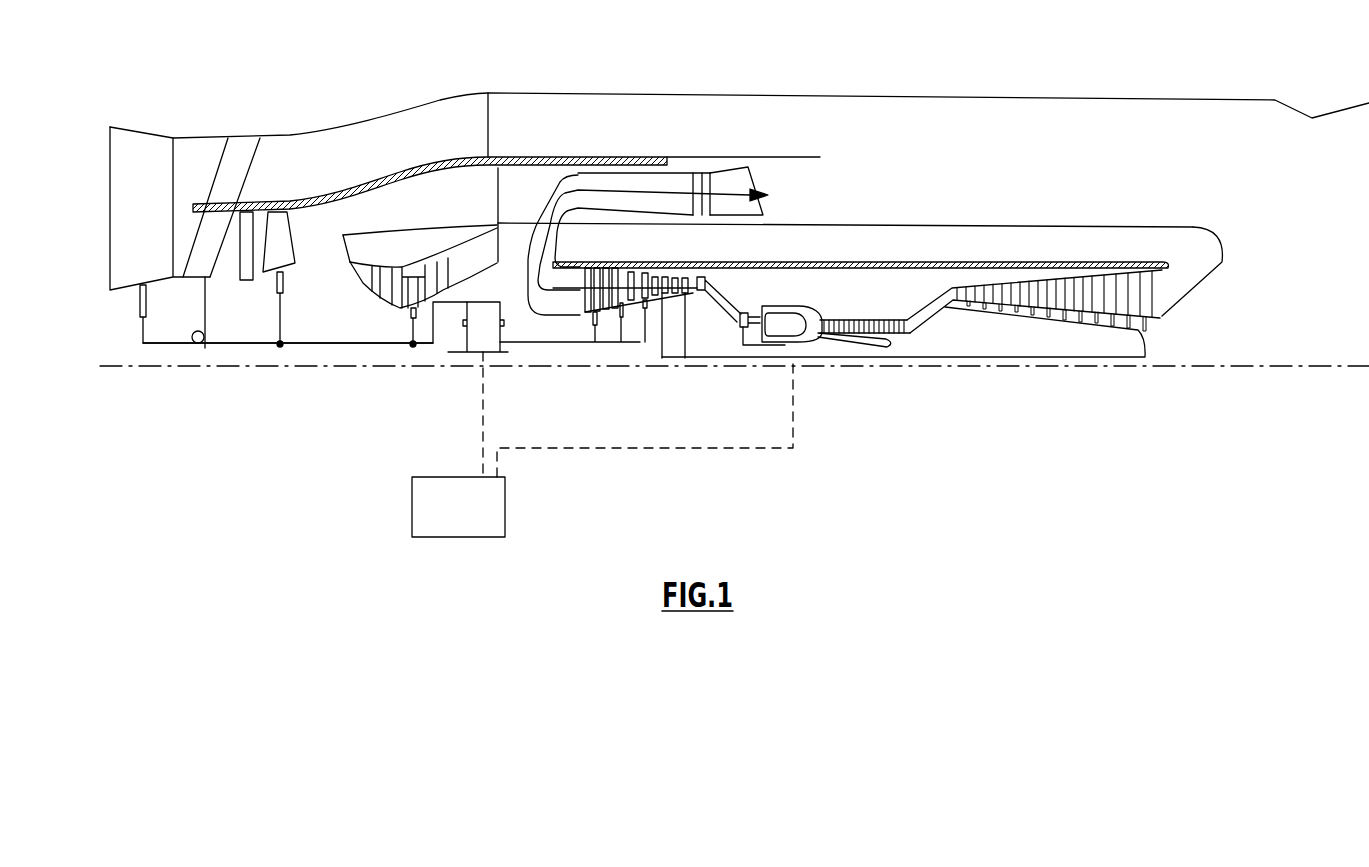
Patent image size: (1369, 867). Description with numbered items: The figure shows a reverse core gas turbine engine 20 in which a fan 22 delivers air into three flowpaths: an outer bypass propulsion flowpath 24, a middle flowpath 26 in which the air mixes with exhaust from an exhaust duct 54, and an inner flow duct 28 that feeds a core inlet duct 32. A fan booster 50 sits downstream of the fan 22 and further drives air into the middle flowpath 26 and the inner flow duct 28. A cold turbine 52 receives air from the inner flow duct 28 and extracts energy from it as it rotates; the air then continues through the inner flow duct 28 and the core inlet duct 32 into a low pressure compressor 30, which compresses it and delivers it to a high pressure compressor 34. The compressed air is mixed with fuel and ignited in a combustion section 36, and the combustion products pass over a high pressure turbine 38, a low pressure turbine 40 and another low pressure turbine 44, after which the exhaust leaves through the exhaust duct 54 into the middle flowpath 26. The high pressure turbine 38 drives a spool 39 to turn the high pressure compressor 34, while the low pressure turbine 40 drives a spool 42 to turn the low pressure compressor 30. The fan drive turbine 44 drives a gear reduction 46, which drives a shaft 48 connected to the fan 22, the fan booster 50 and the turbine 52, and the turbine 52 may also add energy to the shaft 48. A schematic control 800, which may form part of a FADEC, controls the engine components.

The gas turbine engine 20 is at (982, 66).
The fan 22 is at (137, 162).
The outer bypass propulsion flowpath 24 is at (947, 144).
The middle flowpath 26 is at (1020, 207).
The inner flow duct 28 is at (1050, 258).
The low pressure compressor 30 is at (1090, 273).
The core inlet duct 32 is at (1203, 267).
The high pressure compressor 34 is at (870, 328).
The combustion section 36 is at (782, 333).
The high pressure turbine 38 is at (737, 325).
The spool 39 is at (853, 345).
The low pressure turbine 40 is at (667, 303).
The spool 42 is at (955, 357).
The low pressure turbine 44 is at (593, 320).
The gear reduction 46 is at (478, 325).
The shaft 48 is at (313, 345).
The fan booster 50 is at (273, 257).
The turbine 52 is at (387, 282).
The exhaust duct 54 is at (730, 183).
The control 800 is at (480, 519).